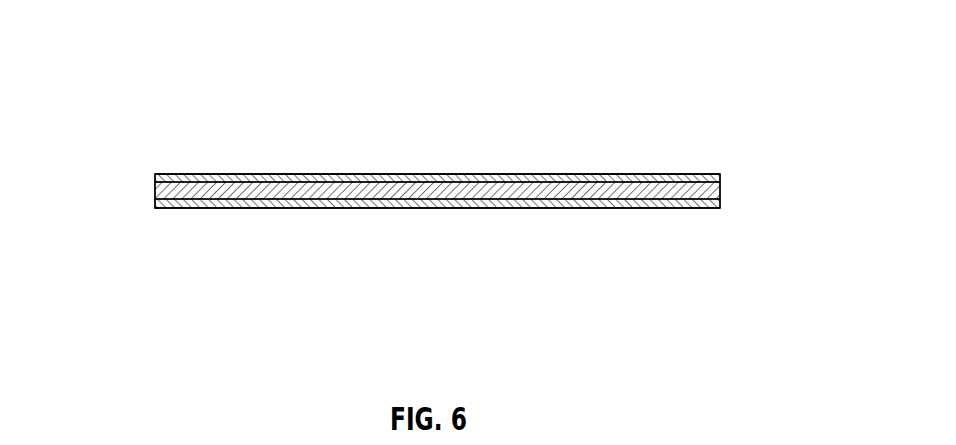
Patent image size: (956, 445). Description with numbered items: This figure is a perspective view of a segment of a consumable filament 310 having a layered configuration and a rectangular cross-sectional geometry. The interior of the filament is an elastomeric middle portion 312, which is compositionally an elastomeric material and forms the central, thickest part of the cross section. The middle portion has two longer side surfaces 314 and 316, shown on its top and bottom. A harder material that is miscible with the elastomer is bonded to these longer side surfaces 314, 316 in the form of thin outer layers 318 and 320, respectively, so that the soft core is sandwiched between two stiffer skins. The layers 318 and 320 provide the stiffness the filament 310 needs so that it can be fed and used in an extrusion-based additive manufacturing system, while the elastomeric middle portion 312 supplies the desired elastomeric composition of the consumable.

The filament 310 is at (410, 142).
The elastomeric middle portion 312 is at (399, 194).
The longer side surface 314 is at (259, 180).
The longer side surface 316 is at (269, 204).
The layer 318 is at (535, 180).
The layer 320 is at (546, 207).